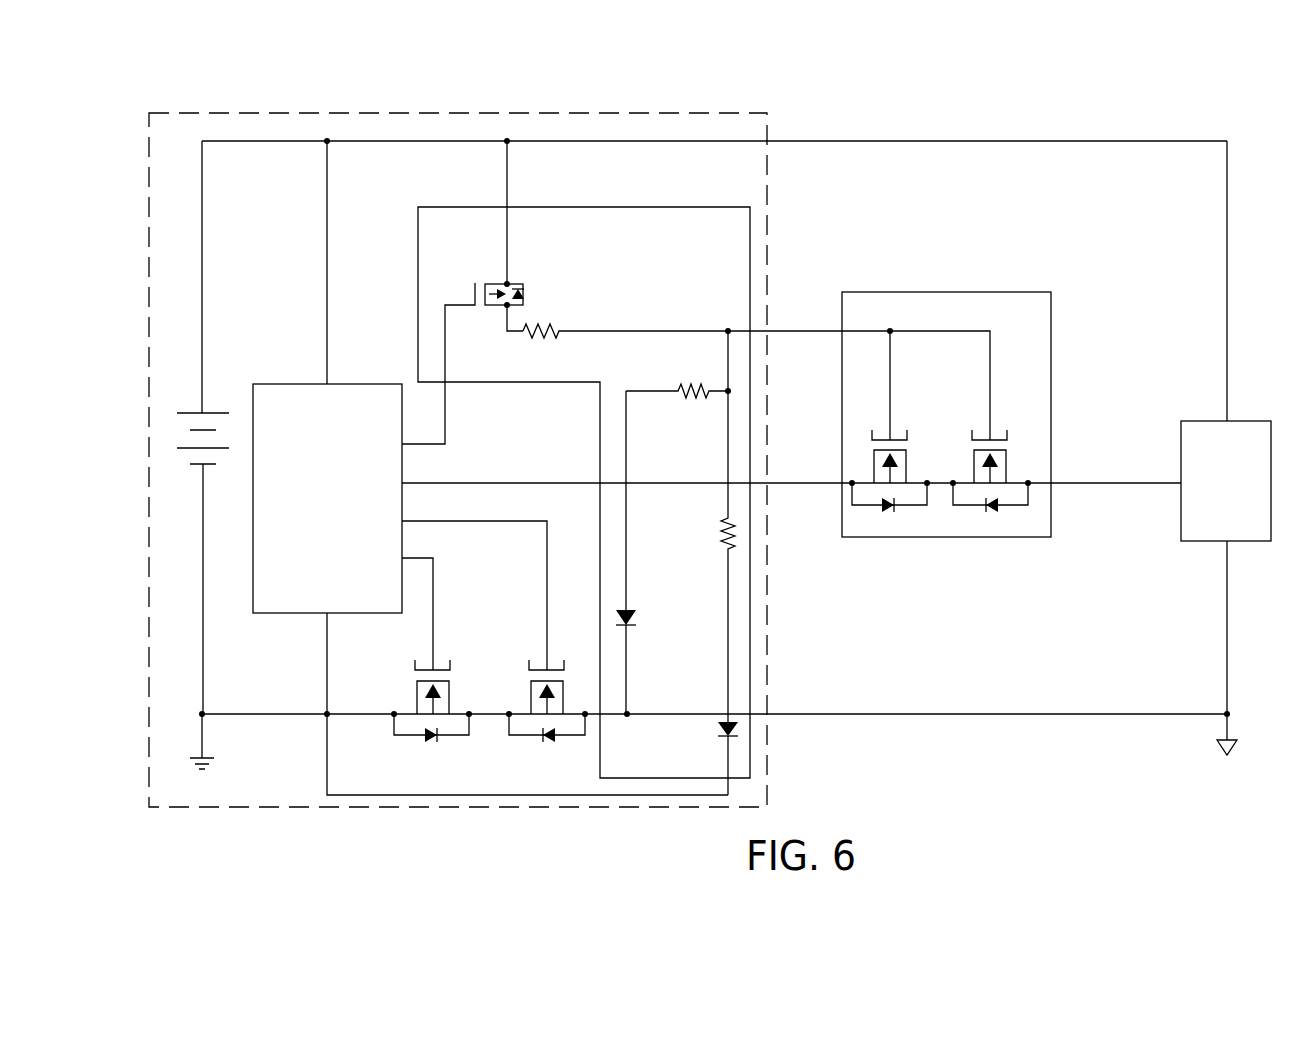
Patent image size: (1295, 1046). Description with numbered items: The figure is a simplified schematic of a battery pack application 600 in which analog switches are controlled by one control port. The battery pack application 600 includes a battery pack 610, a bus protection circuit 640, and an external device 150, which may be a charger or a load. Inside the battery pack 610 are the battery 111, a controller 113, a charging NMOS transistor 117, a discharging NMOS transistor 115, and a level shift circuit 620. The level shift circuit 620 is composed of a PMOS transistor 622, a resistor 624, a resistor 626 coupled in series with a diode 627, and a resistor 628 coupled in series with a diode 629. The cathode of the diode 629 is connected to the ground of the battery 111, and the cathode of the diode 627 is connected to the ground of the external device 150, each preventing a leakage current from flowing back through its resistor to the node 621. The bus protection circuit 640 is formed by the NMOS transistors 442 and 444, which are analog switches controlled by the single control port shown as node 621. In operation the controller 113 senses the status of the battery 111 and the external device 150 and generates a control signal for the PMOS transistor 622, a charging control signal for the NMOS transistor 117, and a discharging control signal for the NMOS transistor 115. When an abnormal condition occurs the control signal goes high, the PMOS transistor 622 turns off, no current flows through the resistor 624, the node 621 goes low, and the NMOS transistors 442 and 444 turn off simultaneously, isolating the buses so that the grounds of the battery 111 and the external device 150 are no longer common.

The battery pack application 600 is at (222, 90).
The battery pack 610 is at (632, 113).
The battery 111 is at (204, 413).
The controller 113 is at (291, 614).
The NMOS transistor 115 is at (437, 670).
The NMOS transistor 117 is at (545, 670).
The level shift circuit 620 is at (672, 207).
The node 621 is at (728, 331).
The PMOS transistor 622 is at (475, 291).
The resistor 624 is at (541, 331).
The resistor 626 is at (694, 388).
The diode 627 is at (632, 626).
The resistor 628 is at (728, 541).
The diode 629 is at (720, 737).
The bus protection circuit 640 is at (1014, 292).
The NMOS transistor 442 is at (895, 440).
The NMOS transistor 444 is at (1000, 440).
The external device 150 is at (1214, 421).